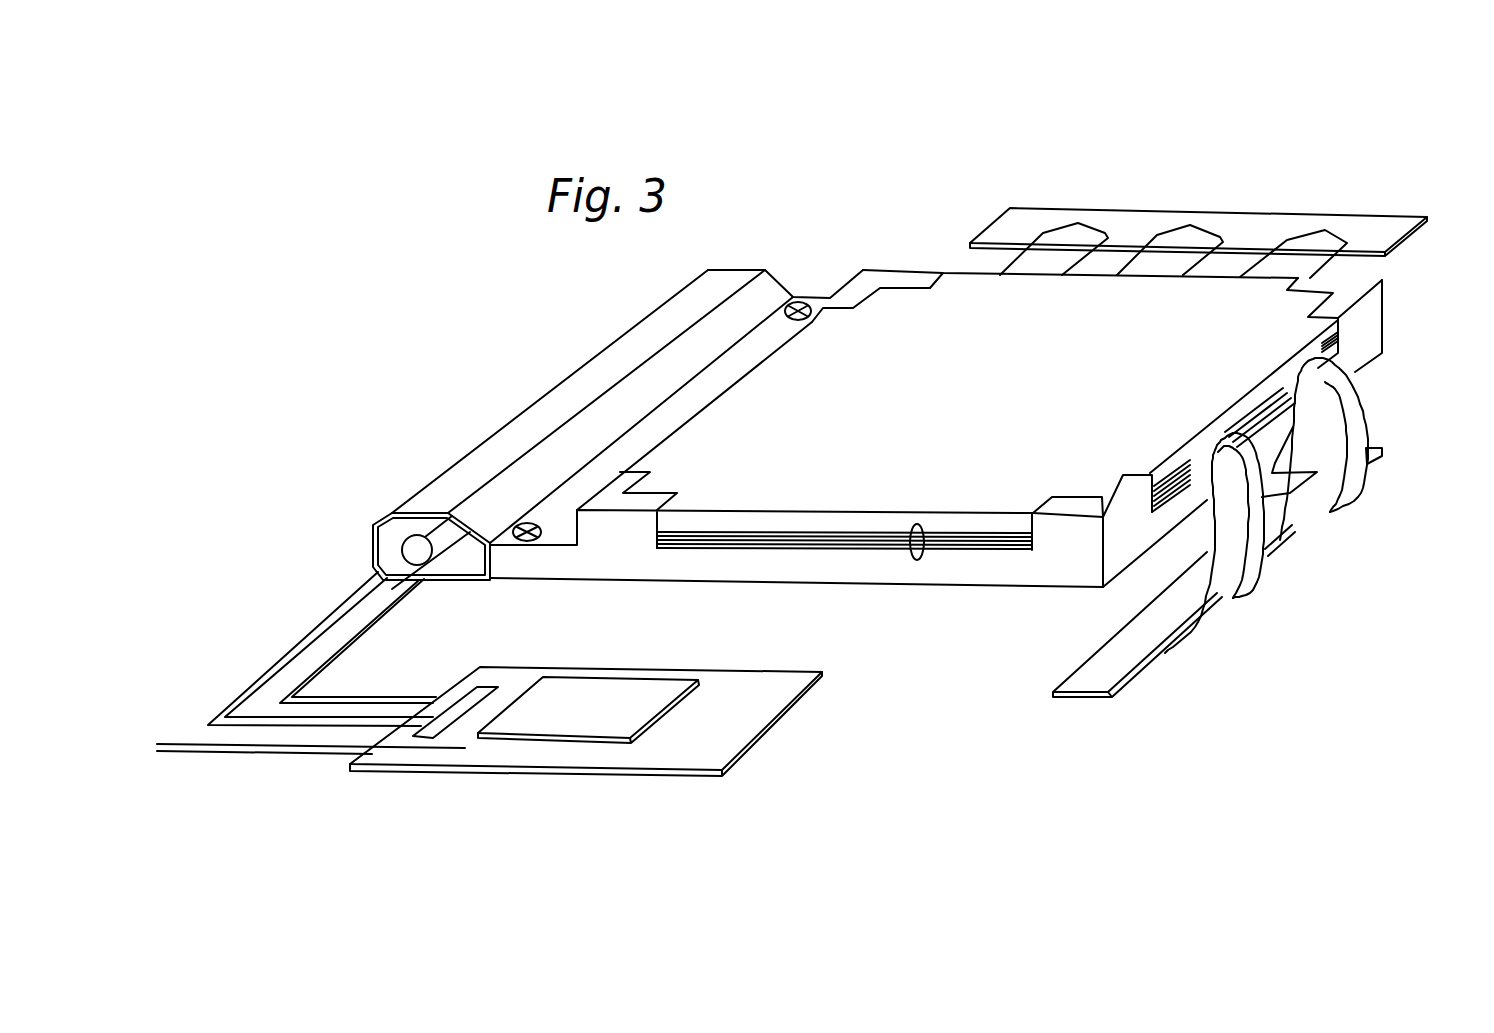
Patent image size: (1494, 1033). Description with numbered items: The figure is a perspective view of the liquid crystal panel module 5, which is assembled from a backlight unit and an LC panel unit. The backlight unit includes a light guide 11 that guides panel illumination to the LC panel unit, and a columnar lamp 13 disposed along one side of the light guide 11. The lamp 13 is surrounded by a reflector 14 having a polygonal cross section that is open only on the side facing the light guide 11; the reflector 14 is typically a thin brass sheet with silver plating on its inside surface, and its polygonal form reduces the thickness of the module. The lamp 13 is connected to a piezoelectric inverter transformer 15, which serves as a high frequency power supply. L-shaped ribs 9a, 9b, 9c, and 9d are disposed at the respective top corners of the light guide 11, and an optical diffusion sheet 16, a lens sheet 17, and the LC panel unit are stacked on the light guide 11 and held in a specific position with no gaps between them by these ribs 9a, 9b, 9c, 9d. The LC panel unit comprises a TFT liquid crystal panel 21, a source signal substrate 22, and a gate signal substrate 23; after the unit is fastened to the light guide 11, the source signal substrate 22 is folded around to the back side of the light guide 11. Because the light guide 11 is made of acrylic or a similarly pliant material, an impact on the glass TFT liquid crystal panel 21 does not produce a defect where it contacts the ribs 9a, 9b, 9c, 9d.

The liquid crystal panel module 5 is at (878, 113).
The L-shaped rib 9a is at (643, 500).
The L-shaped rib 9b is at (1083, 503).
The L-shaped rib 9c is at (1383, 297).
The L-shaped rib 9d is at (898, 277).
The light guide 11 is at (980, 567).
The columnar lamp 13 is at (413, 550).
The reflector 14 is at (493, 439).
The piezoelectric inverter transformer 15 is at (688, 732).
The optical diffusion sheet 16 is at (903, 552).
The lens sheet 17 is at (1102, 474).
The TFT liquid crystal panel 21 is at (986, 405).
The source signal substrate 22 is at (1113, 660).
The gate signal substrate 23 is at (1250, 220).